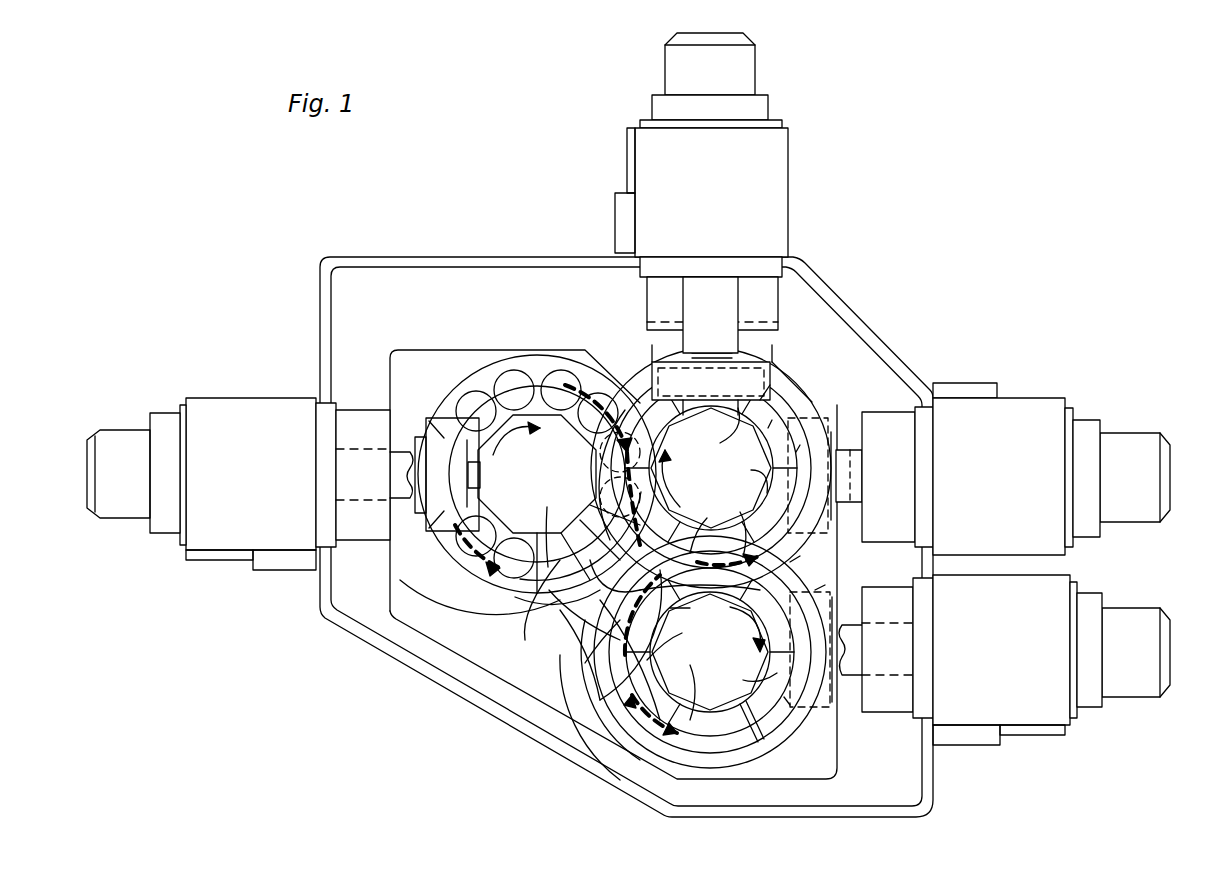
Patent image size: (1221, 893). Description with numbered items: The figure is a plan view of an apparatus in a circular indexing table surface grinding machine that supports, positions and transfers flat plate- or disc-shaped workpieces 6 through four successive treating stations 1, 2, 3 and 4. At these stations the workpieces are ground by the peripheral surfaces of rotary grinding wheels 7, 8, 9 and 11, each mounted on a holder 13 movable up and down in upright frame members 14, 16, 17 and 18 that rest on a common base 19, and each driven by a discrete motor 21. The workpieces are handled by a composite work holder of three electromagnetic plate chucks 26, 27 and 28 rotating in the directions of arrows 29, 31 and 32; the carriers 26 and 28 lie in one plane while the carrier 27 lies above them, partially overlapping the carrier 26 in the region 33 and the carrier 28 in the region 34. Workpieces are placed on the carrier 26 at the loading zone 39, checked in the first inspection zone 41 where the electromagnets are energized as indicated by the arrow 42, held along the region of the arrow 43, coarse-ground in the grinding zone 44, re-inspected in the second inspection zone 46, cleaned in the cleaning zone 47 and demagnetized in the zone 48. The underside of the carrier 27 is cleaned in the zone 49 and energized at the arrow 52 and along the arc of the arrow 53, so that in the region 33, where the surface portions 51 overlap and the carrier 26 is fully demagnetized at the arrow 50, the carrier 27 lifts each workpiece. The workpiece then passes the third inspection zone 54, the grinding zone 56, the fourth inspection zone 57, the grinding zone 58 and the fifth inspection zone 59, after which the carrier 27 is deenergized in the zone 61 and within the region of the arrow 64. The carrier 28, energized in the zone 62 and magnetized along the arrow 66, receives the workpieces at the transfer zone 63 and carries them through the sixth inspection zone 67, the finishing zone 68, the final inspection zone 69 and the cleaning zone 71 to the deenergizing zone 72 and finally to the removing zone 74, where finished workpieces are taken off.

The treating station 1 is at (262, 610).
The treating station 2 is at (832, 165).
The treating station 3 is at (990, 348).
The treating station 4 is at (1118, 736).
The workpiece 6 is at (500, 383).
The grinding wheel 7 is at (432, 413).
The grinding wheel 8 is at (800, 380).
The grinding wheel 9 is at (800, 445).
The grinding wheel 11 is at (827, 700).
The holder 13 is at (600, 600).
The upright frame member 14 is at (237, 418).
The upright frame member 16 is at (780, 152).
The upright frame member 17 is at (1030, 428).
The upright frame member 18 is at (1030, 713).
The base 19 is at (322, 265).
The motor 21 is at (128, 445).
The plate chuck 26 is at (515, 605).
The plate chuck 27 is at (770, 385).
The plate chuck 28 is at (549, 590).
The arrow 29 is at (503, 448).
The arrow 31 is at (670, 473).
The arrow 32 is at (710, 652).
The region of partial overlap 33 is at (623, 370).
The region of partial overlap 34 is at (822, 560).
The loading zone 39 is at (520, 563).
The first inspection zone 41 is at (490, 555).
The double-headed arrow 42 is at (462, 540).
The arrow 43 is at (548, 370).
The grinding zone 44 is at (473, 407).
The second inspection zone 46 is at (473, 390).
The cleaning zone 47 is at (580, 392).
The demagnetizing zone 48 is at (612, 430).
The cleaning zone 49 is at (590, 560).
The double-headed arrow 50 is at (546, 523).
The overlapping surface portions 51 is at (648, 395).
The double-headed arrow 52 is at (560, 610).
The double-headed arrow 53 is at (805, 430).
The third inspection zone 54 is at (665, 380).
The grinding zone 56 is at (719, 434).
The fourth inspection zone 57 is at (772, 420).
The grinding zone 58 is at (746, 473).
The fifth inspection zone 59 is at (800, 556).
The zone 61 is at (733, 525).
The zone 62 is at (693, 608).
The arrow 63 is at (693, 527).
The arrow 64 is at (582, 672).
The arrow 66 is at (790, 705).
The sixth inspection zone 67 is at (825, 585).
The grinding zone 68 is at (747, 680).
The final inspection zone 69 is at (764, 722).
The cleaning zone 71 is at (680, 683).
The zone 72 is at (640, 590).
The removing zone 74 is at (679, 641).